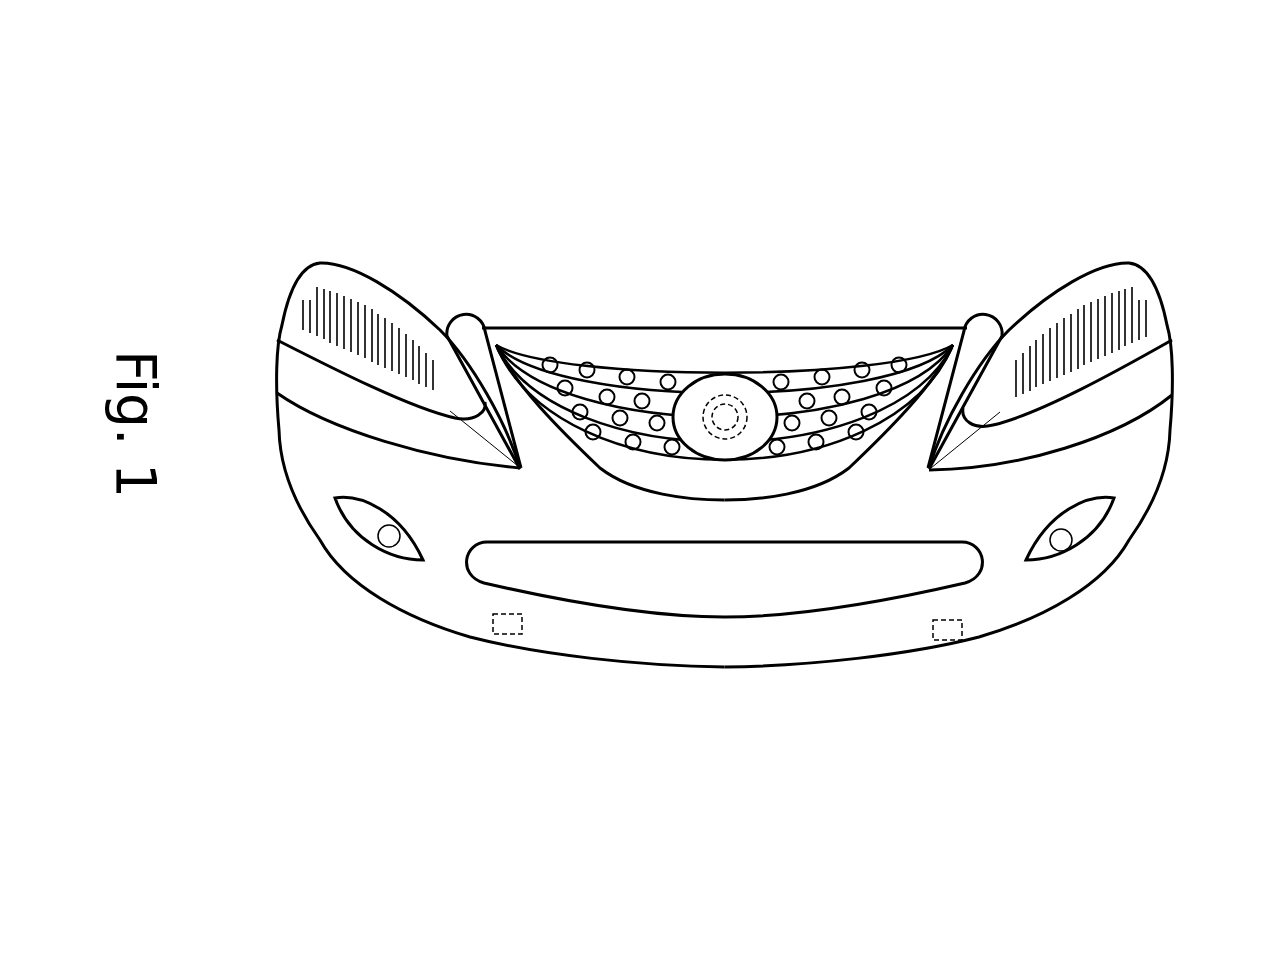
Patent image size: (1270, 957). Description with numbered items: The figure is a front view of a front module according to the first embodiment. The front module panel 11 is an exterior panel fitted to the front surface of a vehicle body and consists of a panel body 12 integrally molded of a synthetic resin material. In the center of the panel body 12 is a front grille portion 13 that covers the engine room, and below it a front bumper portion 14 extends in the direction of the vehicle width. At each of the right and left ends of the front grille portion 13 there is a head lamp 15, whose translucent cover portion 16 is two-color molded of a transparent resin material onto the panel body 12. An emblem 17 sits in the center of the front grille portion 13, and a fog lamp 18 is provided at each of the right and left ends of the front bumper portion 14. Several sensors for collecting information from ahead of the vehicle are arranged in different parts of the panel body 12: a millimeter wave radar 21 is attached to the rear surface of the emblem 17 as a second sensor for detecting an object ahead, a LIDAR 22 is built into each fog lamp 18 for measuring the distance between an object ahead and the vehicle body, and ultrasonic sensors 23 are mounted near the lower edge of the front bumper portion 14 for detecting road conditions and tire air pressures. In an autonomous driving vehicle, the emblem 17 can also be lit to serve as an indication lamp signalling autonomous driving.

The front module panel 11 is at (739, 173).
The panel body 12 is at (617, 328).
The front grille portion 13 is at (840, 373).
The front bumper portion 14 is at (717, 668).
The head lamp 15 is at (322, 250).
The translucent cover portion 16 is at (410, 323).
The emblem 17 is at (722, 373).
The fog lamp 18 is at (352, 512).
The millimeter wave radar 21 is at (735, 424).
The LIDAR 22 is at (392, 540).
The ultrasonic sensors 23 is at (500, 635).